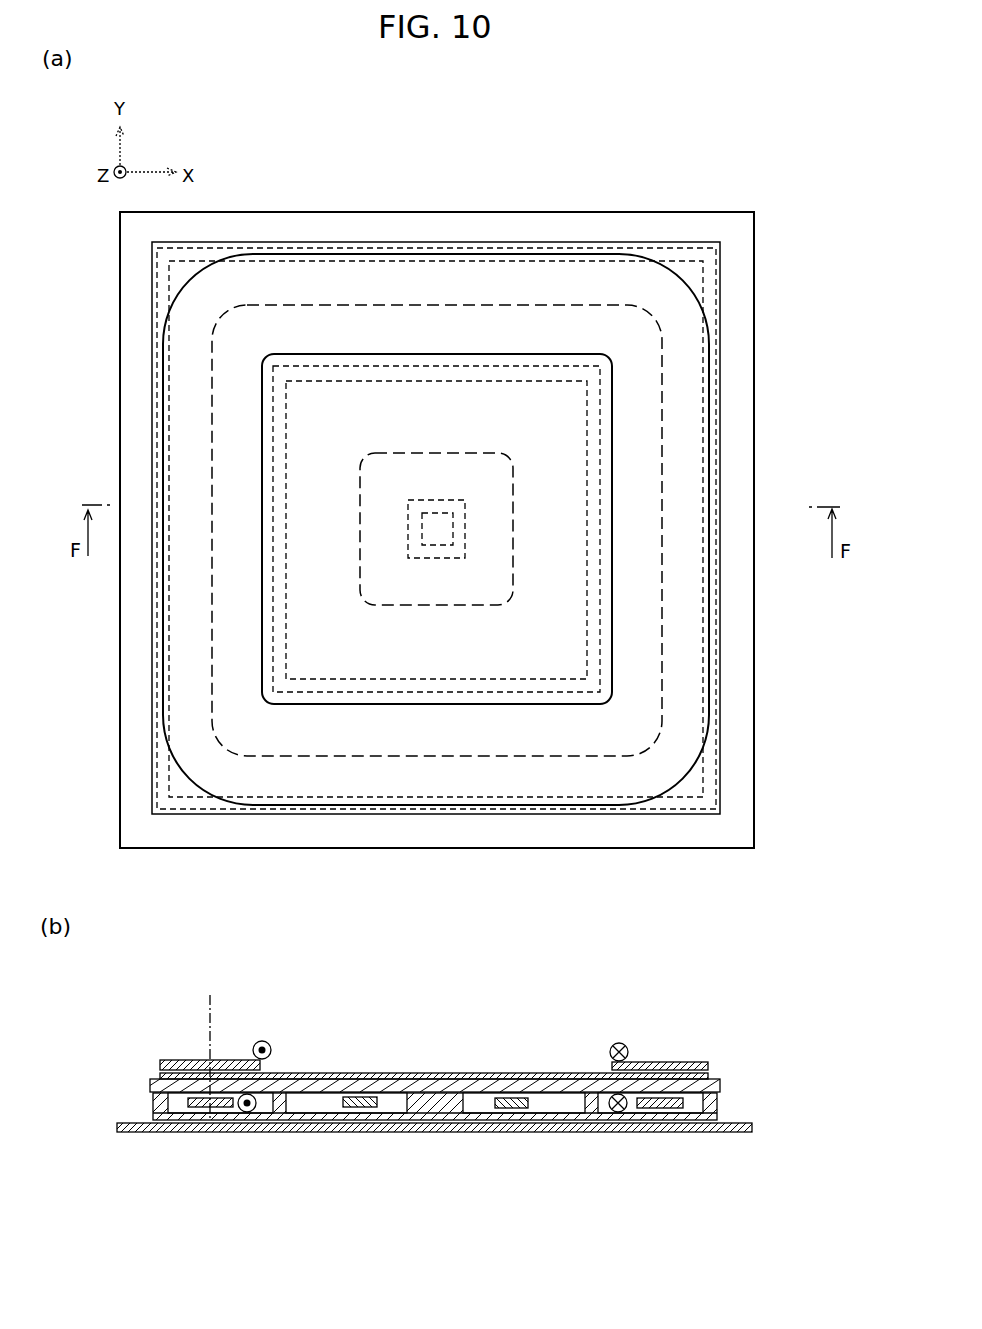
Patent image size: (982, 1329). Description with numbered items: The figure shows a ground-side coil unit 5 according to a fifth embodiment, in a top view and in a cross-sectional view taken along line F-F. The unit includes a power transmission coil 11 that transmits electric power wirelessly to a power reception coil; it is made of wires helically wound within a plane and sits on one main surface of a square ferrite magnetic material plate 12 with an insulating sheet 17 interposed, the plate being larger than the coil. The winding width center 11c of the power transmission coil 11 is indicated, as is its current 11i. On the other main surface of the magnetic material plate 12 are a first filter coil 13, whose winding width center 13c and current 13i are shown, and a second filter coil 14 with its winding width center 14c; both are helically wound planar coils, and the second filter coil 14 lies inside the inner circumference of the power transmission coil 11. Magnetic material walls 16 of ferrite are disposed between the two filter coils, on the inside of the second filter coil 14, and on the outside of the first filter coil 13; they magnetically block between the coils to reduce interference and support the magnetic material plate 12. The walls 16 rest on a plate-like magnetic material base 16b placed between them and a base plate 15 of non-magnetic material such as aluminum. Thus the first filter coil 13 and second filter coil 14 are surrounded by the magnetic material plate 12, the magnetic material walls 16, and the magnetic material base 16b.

The ground-side coil unit 5 is at (672, 212).
The power transmission coil 11 is at (697, 680).
The winding width center of the power transmission coil 11c is at (215, 1007).
The current of the power transmission coil 11i is at (266, 1042).
The magnetic material plate 12 is at (695, 785).
The first filter coil 13 is at (195, 1115).
The winding width center of the first filter coil 13c is at (395, 757).
The current of the first filter coil 13i is at (247, 1112).
The second filter coil 14 is at (356, 1108).
The winding width center of the second filter coil 14c is at (390, 607).
The base plate 15 is at (748, 808).
The magnetic material wall 16 is at (420, 558).
The magnetic material base 16b is at (553, 1112).
The insulating sheet 17 is at (490, 1073).